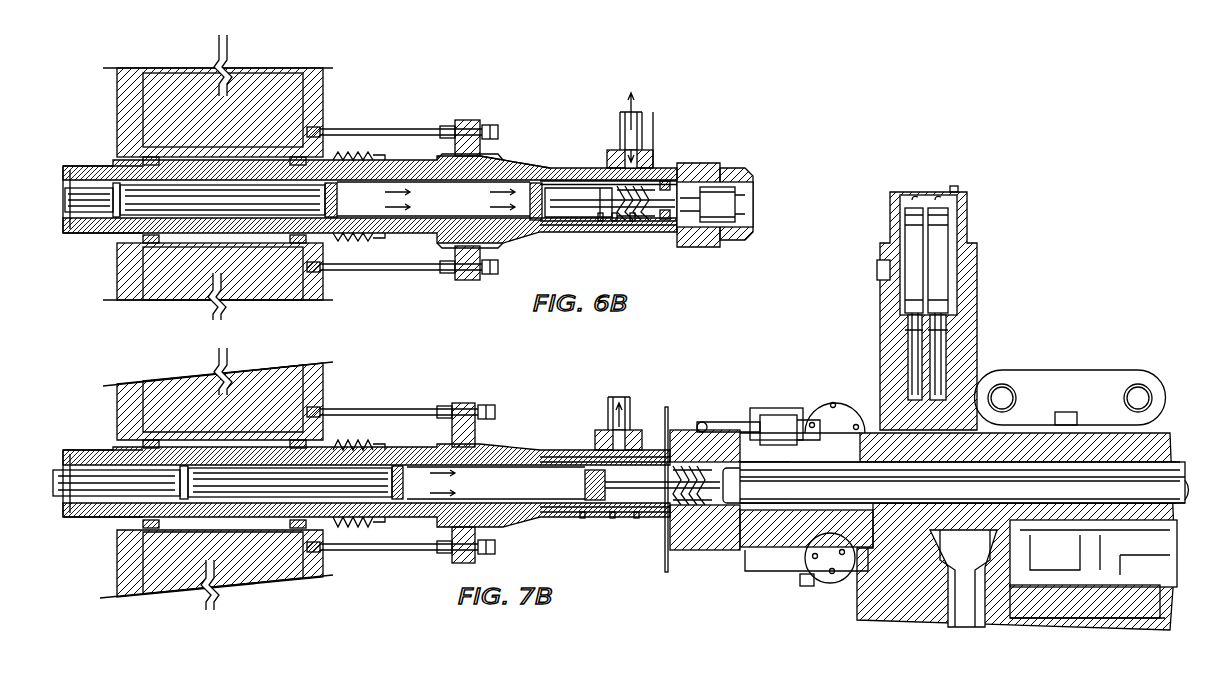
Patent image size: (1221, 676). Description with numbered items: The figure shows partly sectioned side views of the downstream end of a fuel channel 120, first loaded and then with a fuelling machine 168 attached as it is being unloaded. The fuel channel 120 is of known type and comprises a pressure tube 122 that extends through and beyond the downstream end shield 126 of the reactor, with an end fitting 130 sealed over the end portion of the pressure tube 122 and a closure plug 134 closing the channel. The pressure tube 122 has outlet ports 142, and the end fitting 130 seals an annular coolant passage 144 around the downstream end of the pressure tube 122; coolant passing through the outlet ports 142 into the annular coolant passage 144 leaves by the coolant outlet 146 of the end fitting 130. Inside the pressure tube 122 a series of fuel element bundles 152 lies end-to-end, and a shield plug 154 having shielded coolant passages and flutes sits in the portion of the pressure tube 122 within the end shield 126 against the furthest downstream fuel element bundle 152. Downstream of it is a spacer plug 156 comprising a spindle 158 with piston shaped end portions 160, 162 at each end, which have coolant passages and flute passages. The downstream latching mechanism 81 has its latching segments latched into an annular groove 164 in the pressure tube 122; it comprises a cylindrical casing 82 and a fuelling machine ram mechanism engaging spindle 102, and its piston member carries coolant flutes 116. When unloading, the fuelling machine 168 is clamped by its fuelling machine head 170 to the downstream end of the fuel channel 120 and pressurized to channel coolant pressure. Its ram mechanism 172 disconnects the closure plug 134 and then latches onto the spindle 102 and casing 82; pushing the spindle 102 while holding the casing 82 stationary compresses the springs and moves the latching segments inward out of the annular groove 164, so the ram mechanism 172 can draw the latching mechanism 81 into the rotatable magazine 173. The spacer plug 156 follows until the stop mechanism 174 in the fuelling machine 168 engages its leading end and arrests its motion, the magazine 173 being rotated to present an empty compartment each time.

In FIG. 6B, the downstream latching mechanism 81 is at (650, 143).
In FIG. 7B, the downstream latching mechanism 81 is at (665, 427).
In FIG. 6B, the cylindrical casing 82 is at (683, 165).
In FIG. 7B, the cylindrical casing 82 is at (680, 523).
In FIG. 6B, the fuelling machine ram mechanism engaging spindle 102 is at (690, 172).
In FIG. 7B, the fuelling machine ram mechanism engaging spindle 102 is at (720, 460).
In FIG. 6B, the coolant flutes 116 is at (557, 186).
In FIG. 6B, the fuel channel 120 is at (93, 168).
In FIG. 7B, the fuel channel 120 is at (93, 453).
In FIG. 6B, the pressure tube 122 is at (63, 180).
In FIG. 7B, the pressure tube 122 is at (63, 457).
In FIG. 6B, the end shield 126 is at (125, 92).
In FIG. 7B, the end shield 126 is at (117, 392).
In FIG. 6B, the end fitting 130 is at (400, 167).
In FIG. 7B, the end fitting 130 is at (440, 445).
In FIG. 6B, the closure plug 134 is at (753, 180).
In FIG. 6B, the outlet ports 142 is at (633, 223).
In FIG. 7B, the outlet ports 142 is at (637, 520).
In FIG. 6B, the annular coolant passage 144 is at (570, 226).
In FIG. 7B, the annular coolant passage 144 is at (543, 513).
In FIG. 6B, the coolant outlet 146 is at (620, 130).
In FIG. 7B, the coolant outlet 146 is at (607, 400).
In FIG. 6B, the fuel element bundles 152 is at (90, 204).
In FIG. 7B, the fuel element bundles 152 is at (88, 483).
In FIG. 6B, the shield plug 154 is at (252, 198).
In FIG. 7B, the shield plug 154 is at (347, 487).
In FIG. 6B, the spacer plug 156 is at (423, 163).
In FIG. 7B, the spacer plug 156 is at (401, 483).
In FIG. 6B, the spindle 158 is at (487, 165).
In FIG. 6B, the piston shaped end portion 160 is at (337, 232).
In FIG. 6B, the piston shaped end portion 162 is at (537, 181).
In FIG. 7B, the piston shaped end portion 162 is at (652, 485).
In FIG. 6B, the annular groove 164 is at (665, 167).
In FIG. 7B, the fuelling machine 168 is at (1007, 462).
In FIG. 7B, the fuelling machine head 170 is at (703, 428).
In FIG. 7B, the ram mechanism 172 is at (1090, 488).
In FIG. 7B, the magazine 173 is at (1137, 602).
In FIG. 7B, the stop mechanism 174 is at (950, 470).